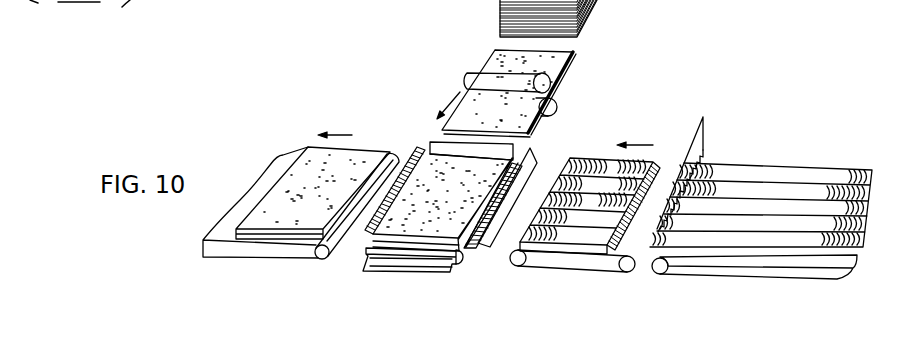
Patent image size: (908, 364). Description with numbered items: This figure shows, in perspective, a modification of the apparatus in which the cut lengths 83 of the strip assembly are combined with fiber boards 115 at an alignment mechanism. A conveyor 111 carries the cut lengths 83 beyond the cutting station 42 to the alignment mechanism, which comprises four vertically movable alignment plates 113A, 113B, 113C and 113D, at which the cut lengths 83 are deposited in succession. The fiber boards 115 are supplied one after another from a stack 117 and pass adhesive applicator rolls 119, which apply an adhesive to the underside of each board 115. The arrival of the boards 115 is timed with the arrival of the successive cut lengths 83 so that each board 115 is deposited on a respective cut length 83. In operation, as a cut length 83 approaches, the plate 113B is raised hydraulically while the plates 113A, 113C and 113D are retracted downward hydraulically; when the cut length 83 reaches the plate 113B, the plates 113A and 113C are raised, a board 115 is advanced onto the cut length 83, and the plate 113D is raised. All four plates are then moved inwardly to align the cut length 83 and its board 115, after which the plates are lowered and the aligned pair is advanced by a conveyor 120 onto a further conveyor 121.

The stack 117 is at (588, 14).
The fiber board 115 is at (573, 58).
The adhesive applicator rolls 119 is at (552, 84).
The alignment plate 113D is at (537, 134).
The alignment plate 113C is at (531, 163).
The alignment plate 113B is at (423, 162).
The alignment plate 113A is at (430, 261).
The conveyor 120 is at (467, 259).
The conveyor 121 is at (296, 257).
The conveyor 111 is at (598, 265).
The cut length 83 is at (643, 160).
The cutting station 42 is at (705, 132).